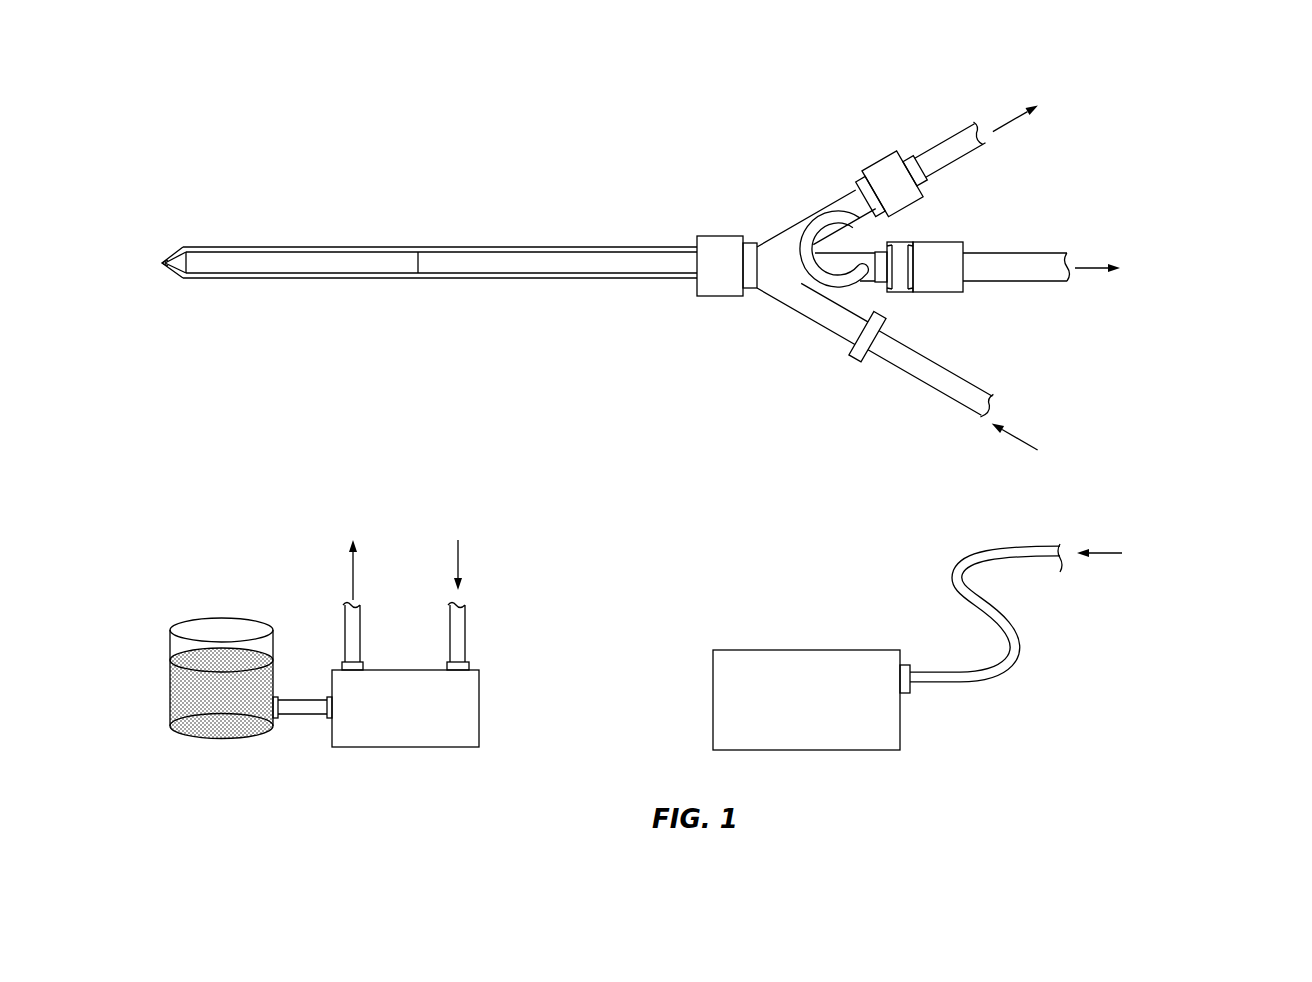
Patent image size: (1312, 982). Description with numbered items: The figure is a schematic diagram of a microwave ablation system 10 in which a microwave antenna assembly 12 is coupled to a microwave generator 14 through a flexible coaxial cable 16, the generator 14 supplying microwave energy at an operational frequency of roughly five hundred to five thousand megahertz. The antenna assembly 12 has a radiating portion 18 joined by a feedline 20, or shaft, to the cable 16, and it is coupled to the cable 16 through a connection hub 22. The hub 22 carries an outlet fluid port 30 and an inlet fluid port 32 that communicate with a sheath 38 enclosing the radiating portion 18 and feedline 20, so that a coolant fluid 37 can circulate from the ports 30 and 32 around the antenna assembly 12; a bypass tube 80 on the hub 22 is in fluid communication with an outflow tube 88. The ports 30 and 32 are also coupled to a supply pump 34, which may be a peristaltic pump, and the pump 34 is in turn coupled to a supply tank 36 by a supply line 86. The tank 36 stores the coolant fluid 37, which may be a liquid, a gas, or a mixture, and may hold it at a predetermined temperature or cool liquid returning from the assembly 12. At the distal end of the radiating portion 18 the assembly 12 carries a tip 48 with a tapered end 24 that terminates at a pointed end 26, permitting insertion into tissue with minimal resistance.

The microwave ablation system 10 is at (257, 108).
The microwave antenna assembly 12 is at (675, 176).
The microwave generator 14 is at (794, 731).
The flexible coaxial cable 16 is at (1010, 253).
The radiating portion 18 is at (285, 247).
The feedline 20 is at (525, 250).
The connection hub 22 is at (787, 330).
The tapered end 24 is at (178, 249).
The pointed end 26 is at (162, 263).
The outlet fluid port 30 is at (867, 180).
The inlet fluid port 32 is at (858, 350).
The supply pump 34 is at (392, 739).
The supply tank 36 is at (170, 672).
The coolant fluid 37 is at (175, 705).
The sheath 38 is at (672, 247).
The tip 48 is at (180, 278).
The bypass tube 80 is at (822, 218).
The supply line 86 is at (932, 385).
The outflow tube 88 is at (945, 148).